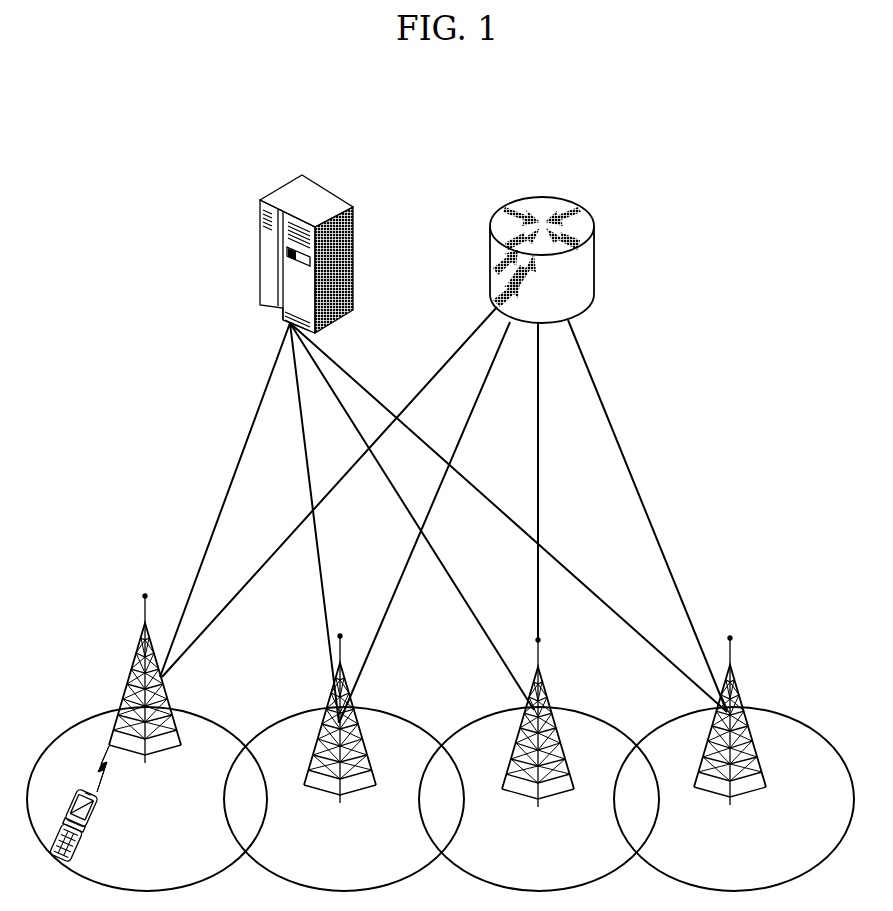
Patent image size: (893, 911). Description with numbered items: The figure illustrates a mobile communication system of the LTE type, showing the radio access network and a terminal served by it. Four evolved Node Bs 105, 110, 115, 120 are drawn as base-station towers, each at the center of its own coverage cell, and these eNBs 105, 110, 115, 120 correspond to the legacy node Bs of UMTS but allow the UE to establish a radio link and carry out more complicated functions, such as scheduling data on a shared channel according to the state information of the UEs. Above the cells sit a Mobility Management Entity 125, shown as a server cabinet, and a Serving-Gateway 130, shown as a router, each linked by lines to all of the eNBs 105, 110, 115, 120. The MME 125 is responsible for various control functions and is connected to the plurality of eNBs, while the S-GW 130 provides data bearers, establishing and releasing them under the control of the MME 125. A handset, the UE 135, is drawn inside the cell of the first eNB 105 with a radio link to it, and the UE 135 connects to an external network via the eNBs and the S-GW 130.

The evolved Node B 105 is at (130, 660).
The evolved Node B 110 is at (330, 688).
The evolved Node B 115 is at (548, 680).
The evolved Node B 120 is at (742, 682).
The Mobility Management Entity 125 is at (290, 197).
The Serving-Gateway 130 is at (540, 200).
The user equipment 135 is at (100, 820).